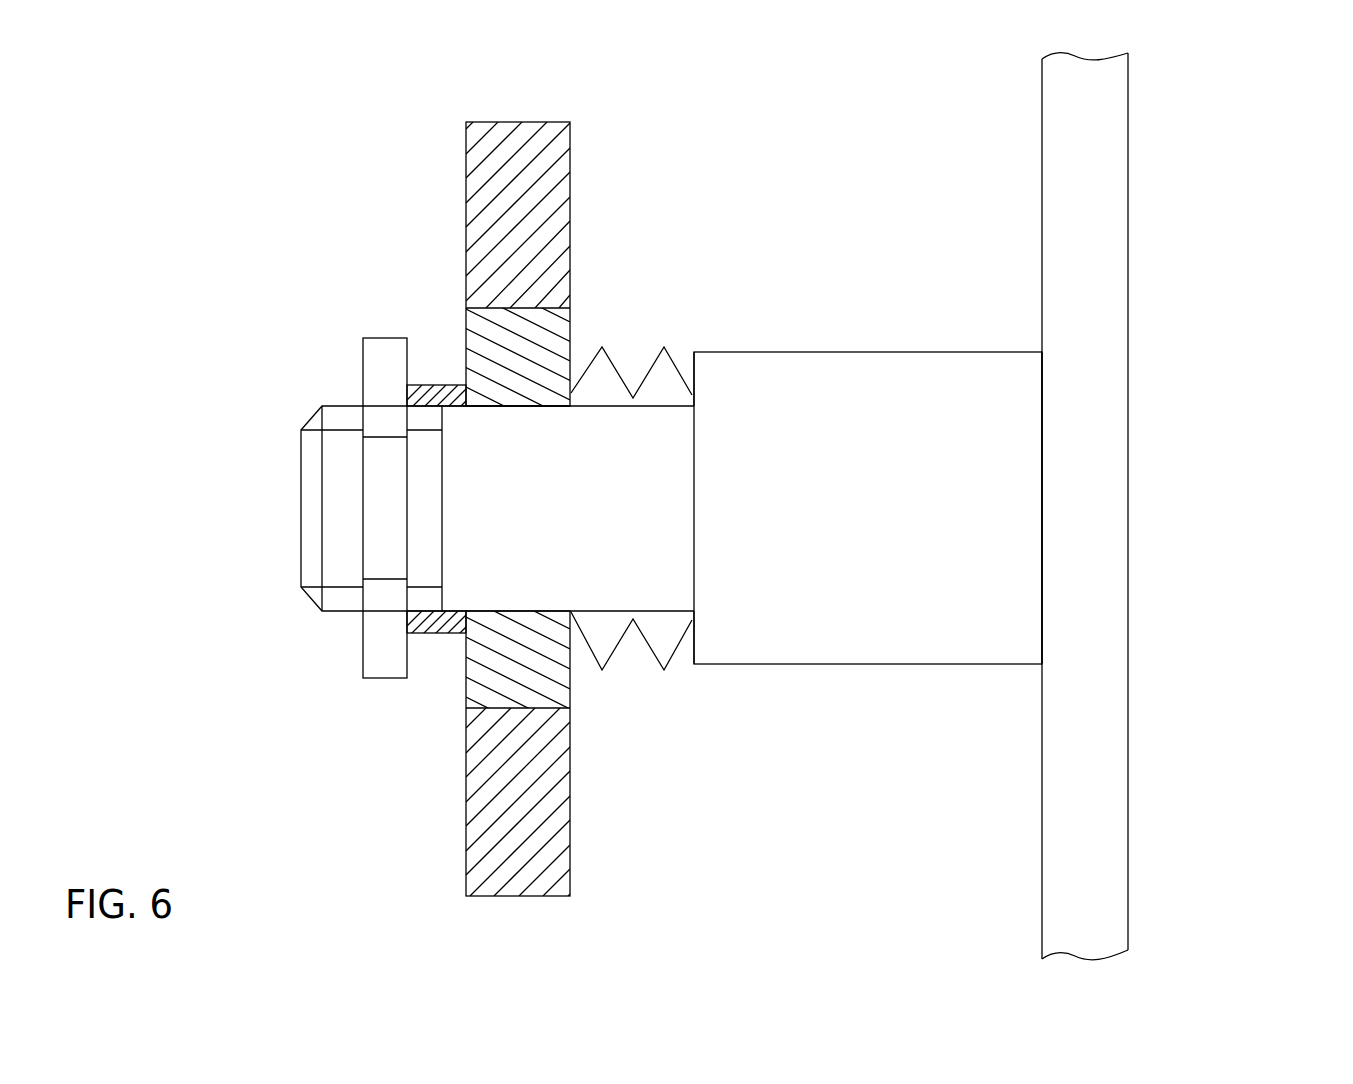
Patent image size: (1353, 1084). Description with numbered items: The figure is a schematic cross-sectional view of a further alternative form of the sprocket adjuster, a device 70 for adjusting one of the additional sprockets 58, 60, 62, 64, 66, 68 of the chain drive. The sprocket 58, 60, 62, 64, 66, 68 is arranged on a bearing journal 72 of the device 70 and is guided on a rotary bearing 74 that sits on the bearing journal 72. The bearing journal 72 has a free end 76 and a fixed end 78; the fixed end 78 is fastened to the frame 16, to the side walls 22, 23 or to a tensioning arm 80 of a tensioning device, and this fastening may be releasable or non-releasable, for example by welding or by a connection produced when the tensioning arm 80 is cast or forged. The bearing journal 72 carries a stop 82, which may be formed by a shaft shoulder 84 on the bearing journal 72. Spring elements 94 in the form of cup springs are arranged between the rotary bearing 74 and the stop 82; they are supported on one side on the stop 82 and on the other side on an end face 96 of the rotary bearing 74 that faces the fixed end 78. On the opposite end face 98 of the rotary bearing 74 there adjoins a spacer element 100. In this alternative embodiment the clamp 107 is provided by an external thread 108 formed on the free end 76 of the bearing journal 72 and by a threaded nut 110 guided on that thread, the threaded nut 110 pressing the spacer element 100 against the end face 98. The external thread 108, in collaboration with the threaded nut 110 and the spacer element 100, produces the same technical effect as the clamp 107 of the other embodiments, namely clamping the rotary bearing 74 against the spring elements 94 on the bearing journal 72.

The frame 16 is at (1148, 505).
The side wall 22 is at (1148, 505).
The side wall 23 is at (1148, 505).
The tensioning arm 80 is at (1148, 505).
The device for adjusting a sprocket 70 is at (595, 416).
The bearing journal 72 is at (648, 526).
The rotary bearing 74 is at (520, 327).
The free end 76 is at (352, 527).
The fixed end 78 is at (1042, 450).
The stop 82 is at (694, 367).
The shaft shoulder 84 is at (694, 642).
The spring elements 94 is at (660, 628).
The end face 96 is at (572, 348).
The end face 98 is at (467, 687).
The spacer element 100 is at (434, 634).
The clamp 107 is at (282, 461).
The external thread 108 is at (338, 432).
The threaded nut 110 is at (384, 362).
The sprocket 58 is at (471, 468).
The sprocket 60 is at (471, 468).
The sprocket 62 is at (471, 468).
The sprocket 64 is at (471, 468).
The sprocket 66 is at (471, 468).
The sprocket 68 is at (471, 468).